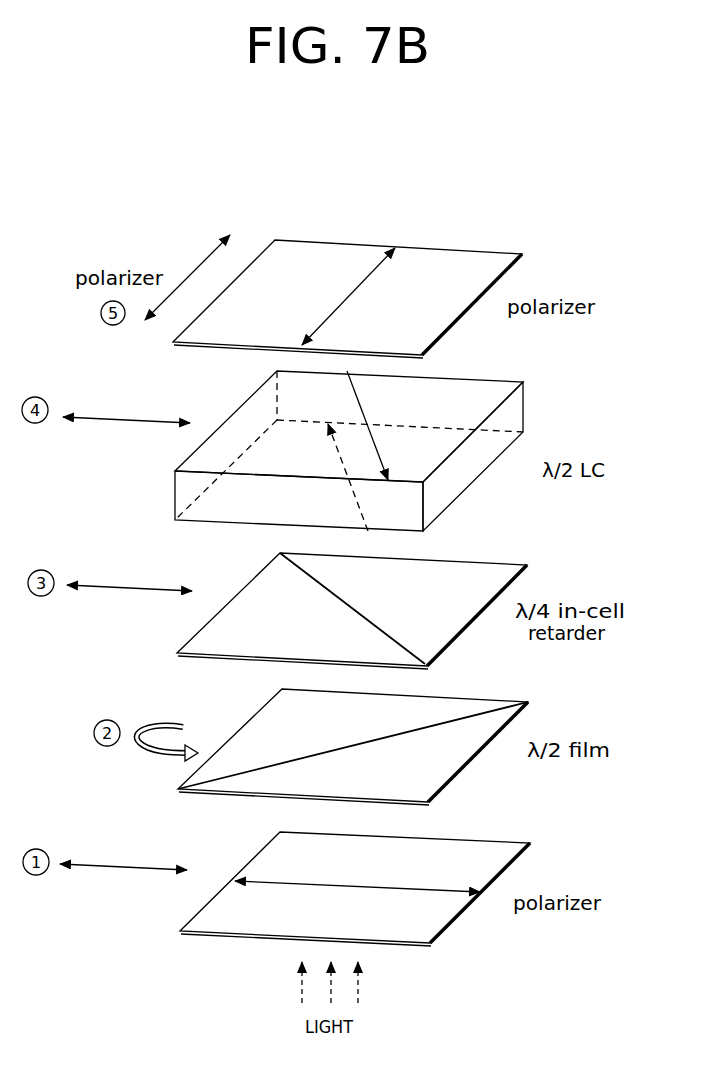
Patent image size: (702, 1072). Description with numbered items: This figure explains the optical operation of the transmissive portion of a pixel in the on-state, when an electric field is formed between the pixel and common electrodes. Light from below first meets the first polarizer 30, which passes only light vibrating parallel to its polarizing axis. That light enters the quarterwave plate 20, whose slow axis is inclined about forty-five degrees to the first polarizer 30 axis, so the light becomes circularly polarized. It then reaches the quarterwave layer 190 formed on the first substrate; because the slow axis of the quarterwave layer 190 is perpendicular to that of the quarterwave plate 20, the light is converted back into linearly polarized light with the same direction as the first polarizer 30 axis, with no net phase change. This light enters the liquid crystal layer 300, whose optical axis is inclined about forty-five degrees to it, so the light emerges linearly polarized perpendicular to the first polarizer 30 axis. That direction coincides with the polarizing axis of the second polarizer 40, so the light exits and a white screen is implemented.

The second polarizer 40 is at (522, 256).
The liquid crystal layer 300 is at (455, 502).
The quarterwave layer 190 is at (525, 568).
The quarterwave plate 20 is at (453, 777).
The first polarizer 30 is at (527, 857).